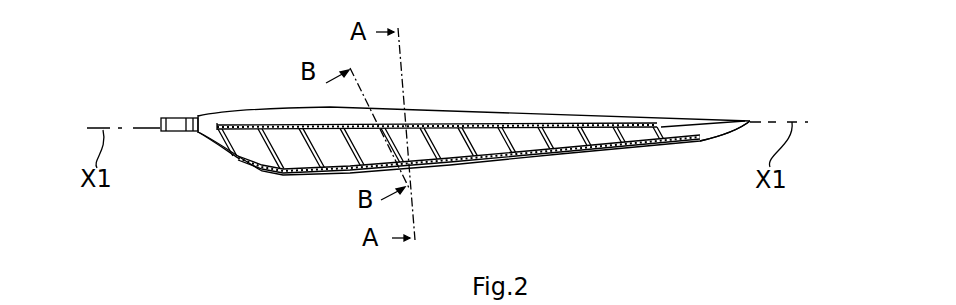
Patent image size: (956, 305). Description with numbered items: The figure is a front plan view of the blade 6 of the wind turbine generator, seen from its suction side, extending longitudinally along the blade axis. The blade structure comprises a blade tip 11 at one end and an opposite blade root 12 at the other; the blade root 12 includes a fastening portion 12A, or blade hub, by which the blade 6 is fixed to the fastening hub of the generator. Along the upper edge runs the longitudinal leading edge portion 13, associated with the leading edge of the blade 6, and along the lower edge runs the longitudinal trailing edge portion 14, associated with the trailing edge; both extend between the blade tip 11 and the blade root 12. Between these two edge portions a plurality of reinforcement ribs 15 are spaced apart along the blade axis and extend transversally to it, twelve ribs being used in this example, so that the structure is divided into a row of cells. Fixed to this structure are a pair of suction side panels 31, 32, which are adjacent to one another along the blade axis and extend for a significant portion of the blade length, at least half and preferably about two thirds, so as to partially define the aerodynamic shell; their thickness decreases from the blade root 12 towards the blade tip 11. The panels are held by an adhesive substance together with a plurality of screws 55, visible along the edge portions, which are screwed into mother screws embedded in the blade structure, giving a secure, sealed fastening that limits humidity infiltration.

The blade 6 is at (505, 75).
The blade tip 11 is at (672, 142).
The blade root 12 is at (203, 140).
The fastening portion 12A is at (183, 117).
The longitudinal leading edge portion 13 is at (272, 107).
The longitudinal trailing edge portion 14 is at (303, 177).
The reinforcement ribs 15 is at (497, 140).
The suction side panel 31 is at (255, 146).
The suction side panel 32 is at (594, 134).
The screws 55 is at (243, 127).